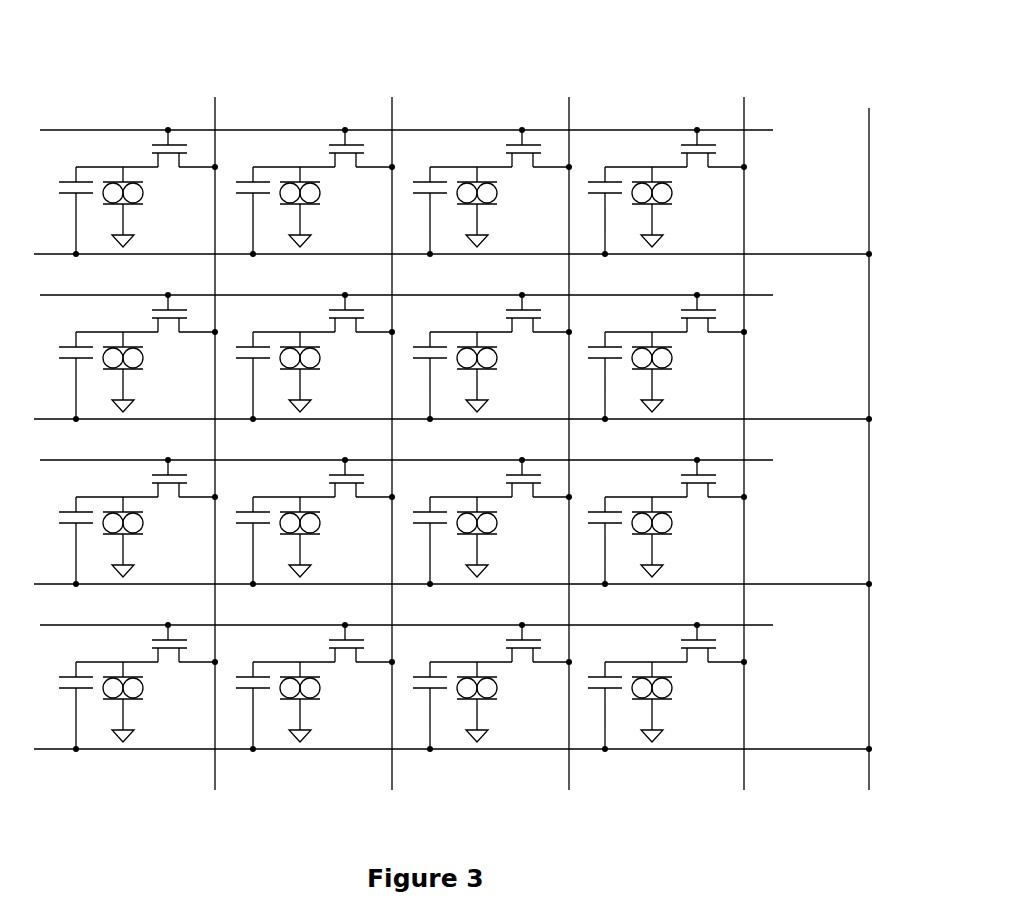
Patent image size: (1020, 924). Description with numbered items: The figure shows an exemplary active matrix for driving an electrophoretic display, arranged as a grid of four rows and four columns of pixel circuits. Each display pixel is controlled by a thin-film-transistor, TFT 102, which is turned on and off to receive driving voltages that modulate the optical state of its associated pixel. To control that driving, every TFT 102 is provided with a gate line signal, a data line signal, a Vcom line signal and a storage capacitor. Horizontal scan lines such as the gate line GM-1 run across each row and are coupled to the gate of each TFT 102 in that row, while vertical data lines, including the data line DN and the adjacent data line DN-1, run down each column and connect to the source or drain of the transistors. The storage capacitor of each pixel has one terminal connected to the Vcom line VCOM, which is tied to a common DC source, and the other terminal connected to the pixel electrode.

The thin-film-transistor 102 is at (662, 147).
The gate line GM-1 is at (433, 382).
The data line DN is at (564, 464).
The data line DN-1 is at (744, 464).
The Vcom line VCOM is at (459, 469).